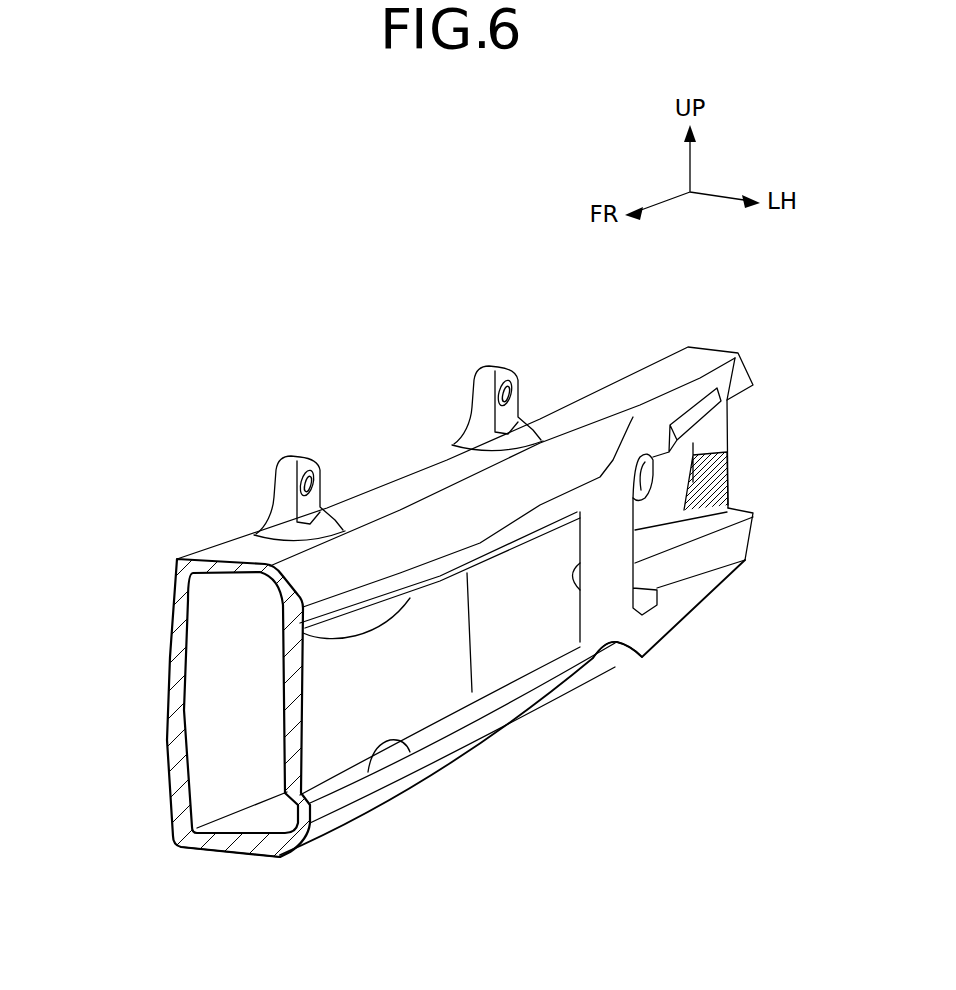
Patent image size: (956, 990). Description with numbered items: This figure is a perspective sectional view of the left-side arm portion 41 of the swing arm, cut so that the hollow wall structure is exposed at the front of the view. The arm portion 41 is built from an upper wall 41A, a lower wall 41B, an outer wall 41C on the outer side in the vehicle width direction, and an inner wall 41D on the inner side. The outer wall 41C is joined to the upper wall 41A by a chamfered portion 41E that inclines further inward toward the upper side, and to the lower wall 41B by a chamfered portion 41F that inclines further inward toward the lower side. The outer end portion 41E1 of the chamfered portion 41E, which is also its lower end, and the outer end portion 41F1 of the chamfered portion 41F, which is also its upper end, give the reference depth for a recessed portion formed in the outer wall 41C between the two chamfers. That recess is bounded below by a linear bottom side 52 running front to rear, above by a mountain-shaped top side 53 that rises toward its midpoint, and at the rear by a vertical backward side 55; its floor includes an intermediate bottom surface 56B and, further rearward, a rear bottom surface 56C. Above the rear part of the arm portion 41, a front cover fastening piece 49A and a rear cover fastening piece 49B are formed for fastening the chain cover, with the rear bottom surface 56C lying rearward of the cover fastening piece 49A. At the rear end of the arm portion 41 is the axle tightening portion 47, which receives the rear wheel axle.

The arm portion 41 is at (170, 514).
The upper wall 41A is at (413, 493).
The lower wall 41B is at (232, 857).
The outer wall 41C is at (495, 642).
The inner wall 41D is at (172, 684).
The chamfered portion 41E is at (515, 493).
The outer end portion 41E1 is at (388, 578).
The chamfered portion 41F is at (460, 757).
The outer end portion 41F1 is at (410, 765).
The axle tightening portion 47 is at (735, 472).
The cover fastening piece 49A is at (285, 472).
The cover fastening piece 49B is at (490, 390).
The bottom side 52 is at (368, 772).
The top side 53 is at (300, 640).
The backward side 55 is at (580, 590).
The intermediate bottom surface 56B is at (377, 712).
The rear bottom surface 56C is at (556, 614).